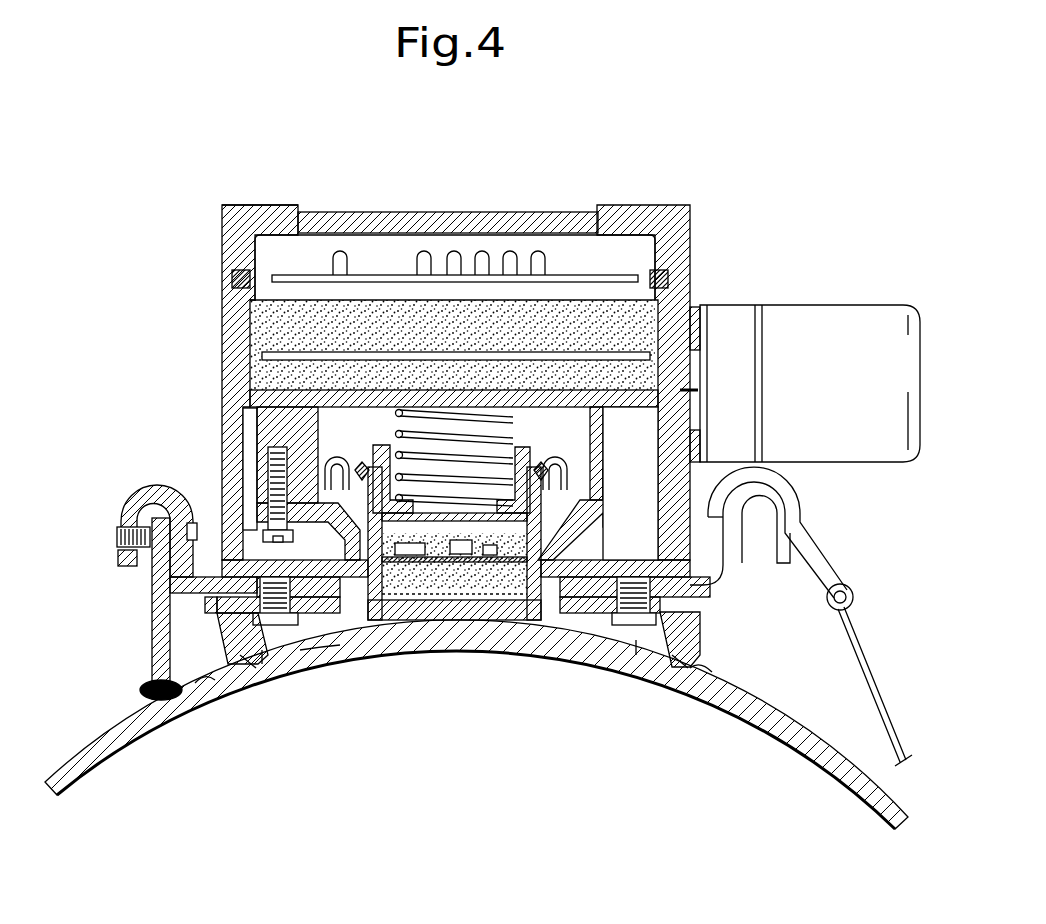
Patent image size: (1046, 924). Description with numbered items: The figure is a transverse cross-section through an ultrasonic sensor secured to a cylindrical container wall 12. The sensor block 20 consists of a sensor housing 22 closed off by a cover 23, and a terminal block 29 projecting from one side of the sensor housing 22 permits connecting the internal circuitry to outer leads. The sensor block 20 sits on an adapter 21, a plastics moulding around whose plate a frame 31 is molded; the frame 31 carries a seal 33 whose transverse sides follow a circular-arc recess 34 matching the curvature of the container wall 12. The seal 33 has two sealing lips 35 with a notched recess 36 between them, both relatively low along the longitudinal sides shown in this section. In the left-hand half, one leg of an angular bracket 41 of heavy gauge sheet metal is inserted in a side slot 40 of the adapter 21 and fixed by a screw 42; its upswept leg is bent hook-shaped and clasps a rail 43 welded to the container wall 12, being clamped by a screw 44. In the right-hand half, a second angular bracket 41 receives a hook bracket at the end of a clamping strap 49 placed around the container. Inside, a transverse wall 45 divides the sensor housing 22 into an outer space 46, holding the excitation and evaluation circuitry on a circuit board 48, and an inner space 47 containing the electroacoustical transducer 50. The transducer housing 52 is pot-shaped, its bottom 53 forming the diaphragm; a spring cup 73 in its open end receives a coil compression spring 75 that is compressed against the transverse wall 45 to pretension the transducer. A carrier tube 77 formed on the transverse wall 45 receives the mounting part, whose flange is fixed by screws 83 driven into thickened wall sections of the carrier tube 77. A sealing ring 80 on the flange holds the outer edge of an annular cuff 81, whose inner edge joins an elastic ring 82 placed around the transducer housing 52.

The container wall 12 is at (112, 760).
The sensor block 20 is at (218, 238).
The adapter 21 is at (213, 604).
The sensor housing 22 is at (228, 340).
The cover 23 is at (615, 210).
The terminal block 29 is at (838, 325).
The frame 31 is at (220, 610).
The seal 33 is at (220, 642).
The recess 34 is at (318, 655).
The sealing lips 35 is at (203, 690).
The notched recess 36 is at (250, 660).
The side slot 40 is at (328, 615).
The angular bracket 41 is at (145, 488).
The screw 42 is at (300, 625).
The rail 43 is at (160, 575).
The screw 44 is at (118, 530).
The transverse wall 45 is at (362, 395).
The outer space 46 is at (258, 320).
The inner space 47 is at (330, 415).
The circuit board 48 is at (553, 352).
The clamping strap 49 is at (870, 668).
The electroacoustical transducer 50 is at (556, 610).
The transducer housing 52 is at (380, 625).
The bottom 53 is at (443, 600).
The spring cup 73 is at (507, 587).
The coil compression spring 75 is at (380, 415).
The carrier tube 77 is at (290, 430).
The sealing ring 80 is at (600, 532).
The annular cuff 81 is at (587, 452).
The elastic ring 82 is at (548, 470).
The screws 83 is at (277, 473).